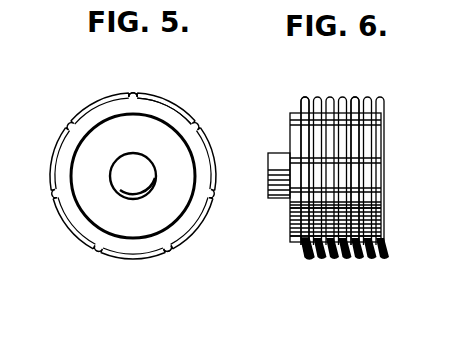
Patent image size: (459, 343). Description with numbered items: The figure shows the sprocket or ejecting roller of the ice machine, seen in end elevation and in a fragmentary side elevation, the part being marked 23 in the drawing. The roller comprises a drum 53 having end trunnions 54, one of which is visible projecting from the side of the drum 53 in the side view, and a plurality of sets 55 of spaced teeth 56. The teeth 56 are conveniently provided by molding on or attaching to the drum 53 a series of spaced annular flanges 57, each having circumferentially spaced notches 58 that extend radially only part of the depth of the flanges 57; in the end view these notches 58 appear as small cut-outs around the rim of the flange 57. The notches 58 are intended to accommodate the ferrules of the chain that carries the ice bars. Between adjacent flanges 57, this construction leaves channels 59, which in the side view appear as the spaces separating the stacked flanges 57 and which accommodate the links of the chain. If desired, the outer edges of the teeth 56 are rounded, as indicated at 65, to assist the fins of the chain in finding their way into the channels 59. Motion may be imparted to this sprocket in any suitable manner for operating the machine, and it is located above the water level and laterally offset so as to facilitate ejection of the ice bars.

In FIG. 5, the rotor body 23 is at (101, 174).
In FIG. 6, the rotor body 23 is at (382, 160).
In FIG. 5, the drum 53 is at (176, 153).
In FIG. 6, the drum 53 is at (381, 125).
In FIG. 5, the end trunnions 54 is at (136, 187).
In FIG. 6, the end trunnions 54 is at (276, 198).
In FIG. 5, the sets of spaced teeth 55 is at (160, 78).
In FIG. 6, the sets of spaced teeth 55 is at (367, 101).
In FIG. 5, the teeth 56 is at (55, 146).
In FIG. 6, the teeth 56 is at (300, 99).
In FIG. 5, the annular flanges 57 is at (181, 229).
In FIG. 6, the annular flanges 57 is at (299, 246).
In FIG. 5, the notches 58 is at (164, 252).
In FIG. 6, the notches 58 is at (372, 195).
In FIG. 6, the channels 59 is at (303, 263).
In FIG. 6, the rounded outer edges of the teeth 65 is at (355, 99).